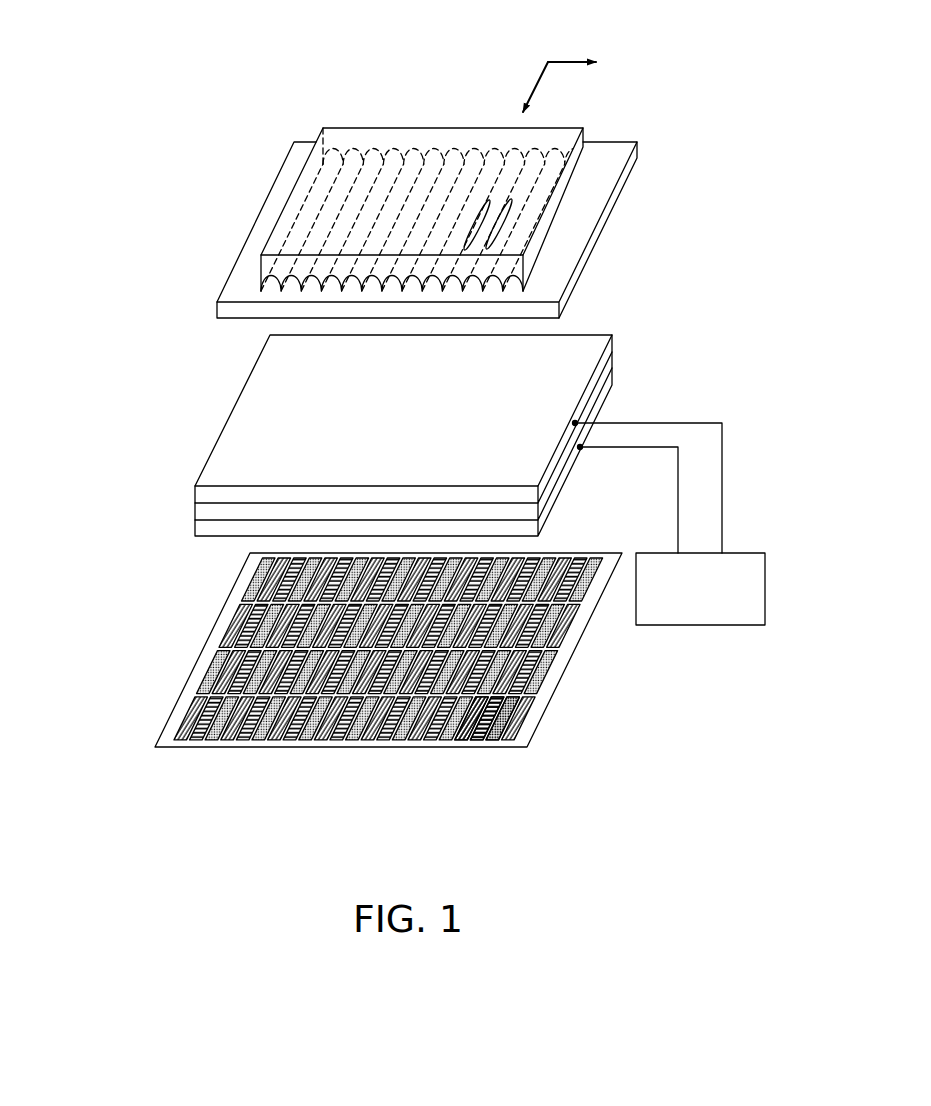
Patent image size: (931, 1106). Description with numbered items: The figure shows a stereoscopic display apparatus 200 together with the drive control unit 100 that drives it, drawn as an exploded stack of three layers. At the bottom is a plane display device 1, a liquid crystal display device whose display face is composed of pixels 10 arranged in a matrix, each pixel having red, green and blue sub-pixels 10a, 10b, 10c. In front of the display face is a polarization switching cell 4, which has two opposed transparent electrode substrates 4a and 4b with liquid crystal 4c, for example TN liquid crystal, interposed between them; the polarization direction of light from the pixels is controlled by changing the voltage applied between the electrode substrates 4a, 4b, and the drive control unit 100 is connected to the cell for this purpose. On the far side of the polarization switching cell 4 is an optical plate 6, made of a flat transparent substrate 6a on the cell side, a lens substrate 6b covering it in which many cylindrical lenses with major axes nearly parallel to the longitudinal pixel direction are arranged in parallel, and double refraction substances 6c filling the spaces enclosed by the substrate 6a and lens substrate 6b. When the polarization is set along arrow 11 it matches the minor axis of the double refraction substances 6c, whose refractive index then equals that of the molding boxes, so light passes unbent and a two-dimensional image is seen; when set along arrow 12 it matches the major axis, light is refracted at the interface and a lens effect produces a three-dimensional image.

The stereoscopic display apparatus 200 is at (117, 120).
The plane display device 1 is at (207, 639).
The pixels 10 is at (476, 767).
The sub-pixel 10a is at (465, 741).
The sub-pixel 10b is at (476, 741).
The sub-pixel 10c is at (516, 747).
The polarization switching cell 4 is at (185, 470).
The transparent electrode substrate 4a is at (613, 380).
The transparent electrode substrate 4b is at (613, 343).
The liquid crystal 4c is at (613, 360).
The optical plate 6 is at (210, 243).
The transparent substrate 6a is at (578, 277).
The lens substrate 6b is at (563, 188).
The double refraction substances 6c is at (500, 230).
The arrow 11 is at (564, 60).
The arrow 12 is at (537, 83).
The drive control unit 100 is at (748, 552).